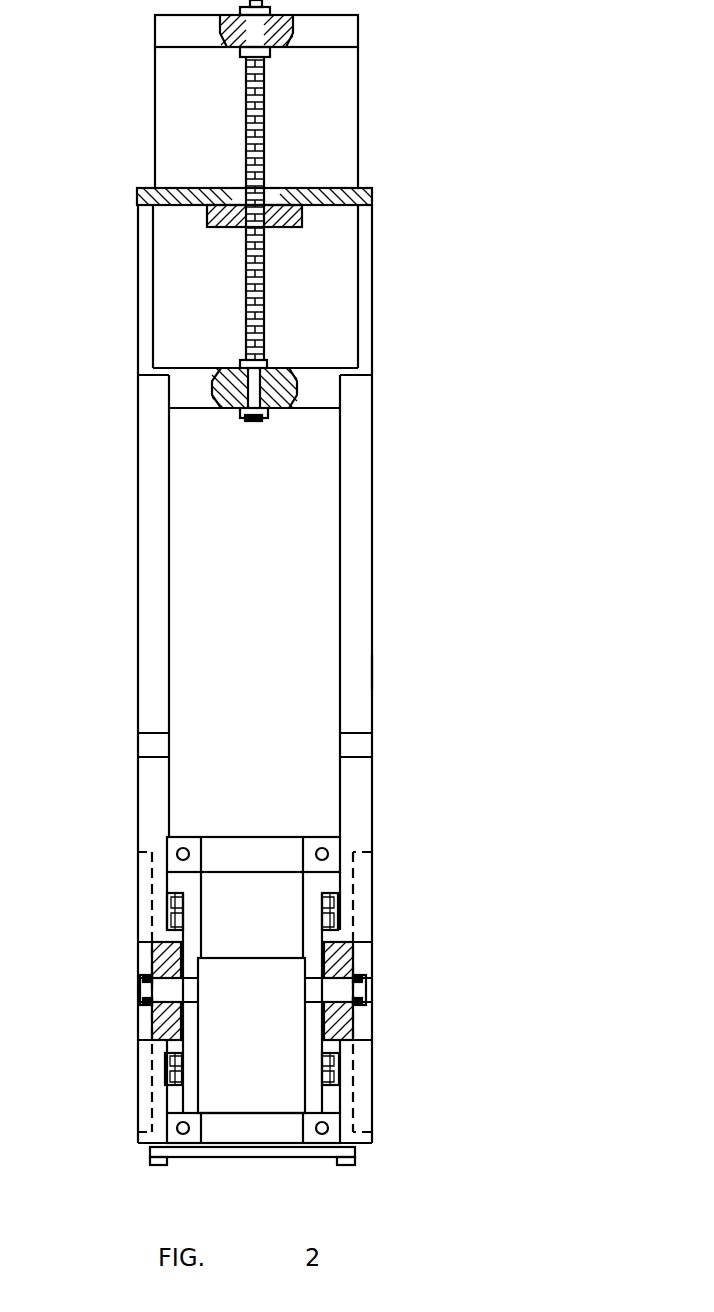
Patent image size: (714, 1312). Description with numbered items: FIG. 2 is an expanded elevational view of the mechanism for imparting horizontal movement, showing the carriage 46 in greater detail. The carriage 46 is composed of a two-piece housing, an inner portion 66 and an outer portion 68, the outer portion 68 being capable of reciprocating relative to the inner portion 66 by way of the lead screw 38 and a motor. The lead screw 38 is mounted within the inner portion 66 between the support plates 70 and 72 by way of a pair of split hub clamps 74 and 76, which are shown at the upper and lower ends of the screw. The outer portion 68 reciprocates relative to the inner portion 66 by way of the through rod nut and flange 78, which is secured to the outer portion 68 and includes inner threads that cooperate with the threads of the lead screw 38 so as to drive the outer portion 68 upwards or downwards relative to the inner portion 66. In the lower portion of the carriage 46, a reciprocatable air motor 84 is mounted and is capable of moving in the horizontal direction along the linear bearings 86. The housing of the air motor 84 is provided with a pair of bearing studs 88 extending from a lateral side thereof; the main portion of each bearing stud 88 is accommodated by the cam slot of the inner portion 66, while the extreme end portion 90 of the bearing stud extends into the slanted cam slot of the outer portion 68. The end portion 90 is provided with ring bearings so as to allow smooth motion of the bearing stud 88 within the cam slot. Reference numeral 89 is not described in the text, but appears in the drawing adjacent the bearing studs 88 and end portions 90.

The support plate 72 is at (343, 27).
The split hub clamp 76 is at (240, 53).
The lead screw 38 is at (245, 132).
The inner portion 66 is at (332, 113).
The carriage 46 is at (370, 480).
The through rod nut and flange 78 is at (223, 230).
The split hub clamp 74 is at (268, 362).
The support plate 70 is at (190, 395).
The outer portion 68 is at (372, 660).
The air motor 84 is at (330, 883).
The linear bearings 86 is at (168, 922).
The upper bearing block 89 is at (147, 977).
The end portion of the bearing stud 90 is at (138, 990).
The bearing stud 88 is at (142, 1012).